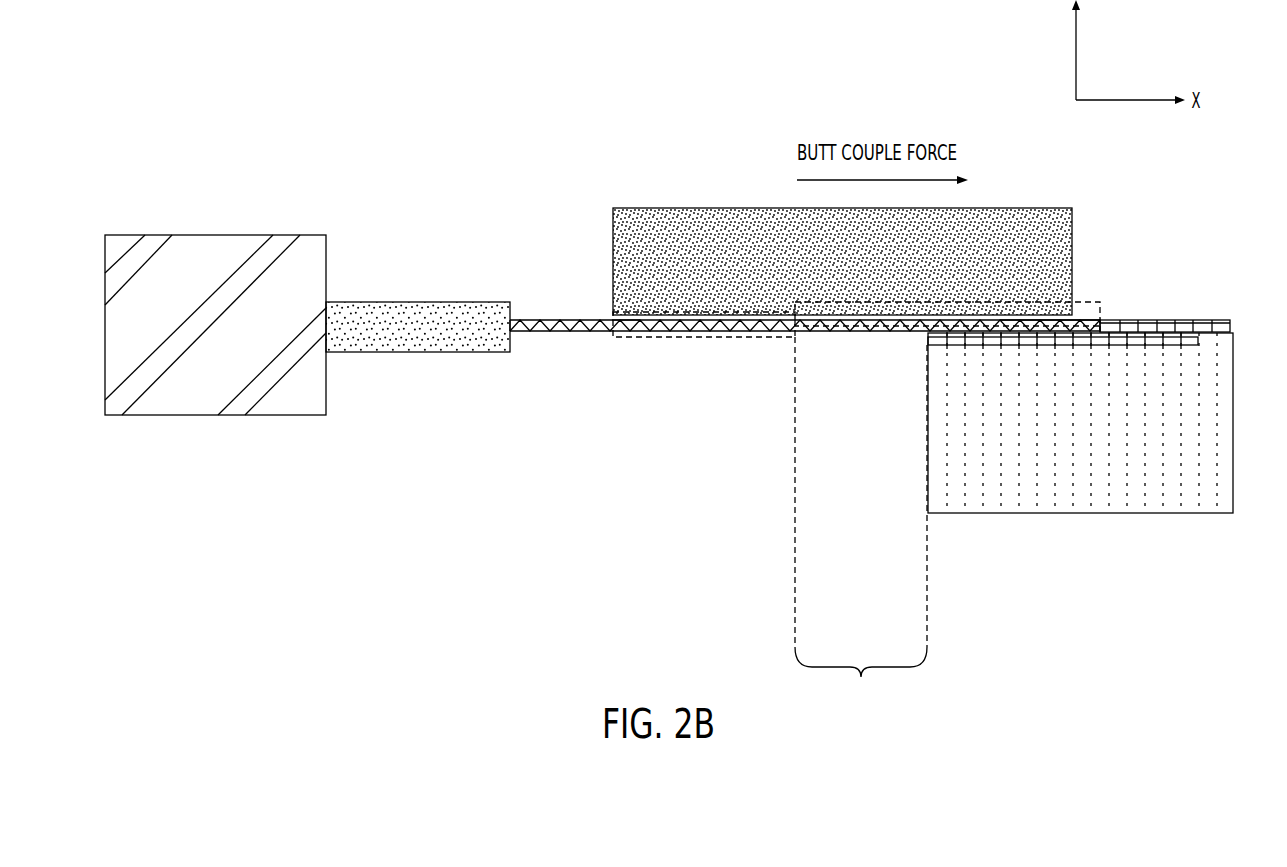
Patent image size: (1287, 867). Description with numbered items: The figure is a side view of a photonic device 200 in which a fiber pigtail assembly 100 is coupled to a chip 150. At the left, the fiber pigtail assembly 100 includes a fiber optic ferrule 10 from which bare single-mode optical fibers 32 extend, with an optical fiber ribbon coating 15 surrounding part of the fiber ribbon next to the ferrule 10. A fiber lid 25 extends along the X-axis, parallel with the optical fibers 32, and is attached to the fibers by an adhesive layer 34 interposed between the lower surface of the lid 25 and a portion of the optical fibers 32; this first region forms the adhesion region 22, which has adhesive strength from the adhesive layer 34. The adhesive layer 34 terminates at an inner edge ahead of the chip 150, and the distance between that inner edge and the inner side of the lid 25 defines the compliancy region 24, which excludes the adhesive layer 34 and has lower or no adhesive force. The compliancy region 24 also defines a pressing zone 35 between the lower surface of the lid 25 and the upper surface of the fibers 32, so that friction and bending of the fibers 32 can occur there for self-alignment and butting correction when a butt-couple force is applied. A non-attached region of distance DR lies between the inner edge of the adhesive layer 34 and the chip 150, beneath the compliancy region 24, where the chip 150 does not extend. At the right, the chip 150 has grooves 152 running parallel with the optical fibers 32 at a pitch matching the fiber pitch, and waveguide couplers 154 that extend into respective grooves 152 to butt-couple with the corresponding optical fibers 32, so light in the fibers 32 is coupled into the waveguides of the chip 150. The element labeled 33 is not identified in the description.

The photonic device 200 is at (514, 72).
The fiber optic ferrule 10 is at (193, 240).
The optical fiber ribbon coating 15 is at (410, 308).
The fiber pigtail assembly 100 is at (465, 374).
The optical fibers 32 is at (550, 320).
The adhesive layer 34 is at (618, 318).
The fiber lid 25 is at (682, 218).
The adhesion region 22 is at (672, 342).
The compliancy region 24 is at (877, 336).
The pressing zone 35 is at (992, 305).
The waveguide end portion 33 is at (1043, 318).
The grooves 152 is at (1082, 334).
The waveguide couplers 154 is at (1172, 320).
The chip 150 is at (1072, 515).